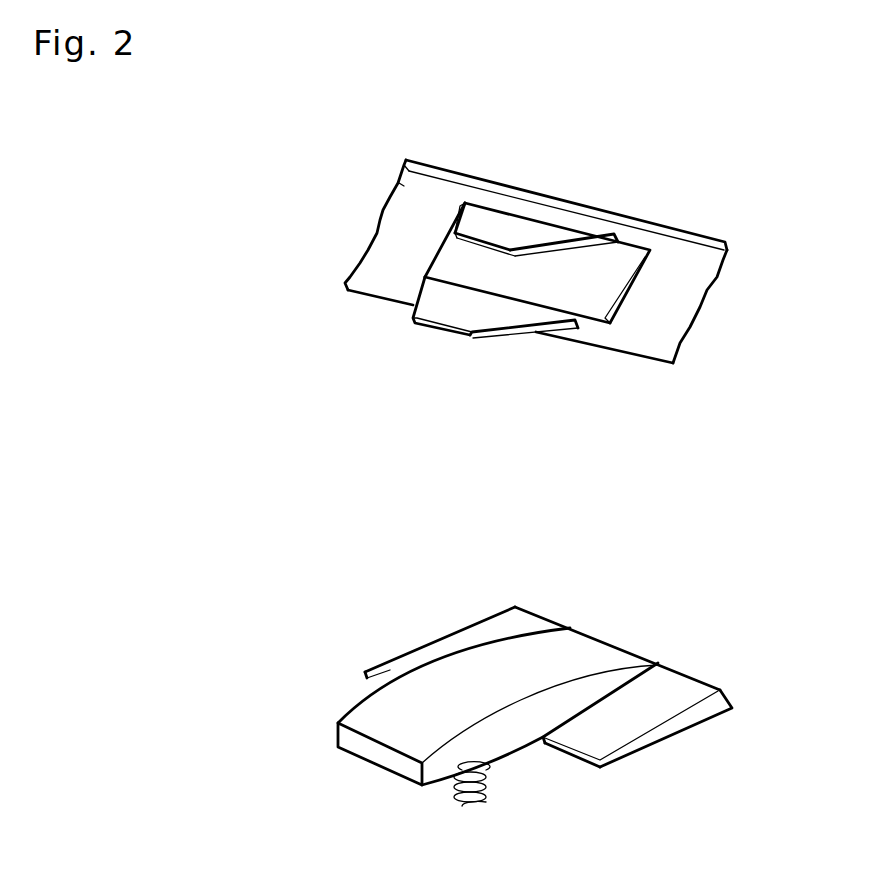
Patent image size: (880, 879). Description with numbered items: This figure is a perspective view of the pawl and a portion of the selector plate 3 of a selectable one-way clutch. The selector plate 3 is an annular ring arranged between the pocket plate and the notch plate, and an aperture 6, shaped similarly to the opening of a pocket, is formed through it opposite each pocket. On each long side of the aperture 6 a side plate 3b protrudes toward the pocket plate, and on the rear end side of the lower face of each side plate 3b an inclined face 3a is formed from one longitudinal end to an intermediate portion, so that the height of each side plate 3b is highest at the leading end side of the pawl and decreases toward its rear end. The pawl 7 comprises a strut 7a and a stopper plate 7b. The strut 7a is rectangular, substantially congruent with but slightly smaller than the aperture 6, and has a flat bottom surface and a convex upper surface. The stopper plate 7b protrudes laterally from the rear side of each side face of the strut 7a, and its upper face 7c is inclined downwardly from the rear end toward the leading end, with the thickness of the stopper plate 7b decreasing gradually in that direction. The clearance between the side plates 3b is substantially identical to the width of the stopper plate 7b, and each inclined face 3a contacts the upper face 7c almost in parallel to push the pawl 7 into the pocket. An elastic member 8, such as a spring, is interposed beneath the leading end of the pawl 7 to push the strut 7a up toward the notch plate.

The selector plate 3 is at (697, 252).
The inclined face 3a is at (596, 244).
The side plate 3b is at (487, 218).
The aperture 6 is at (612, 310).
The pawl 7 is at (593, 597).
The strut 7a is at (337, 725).
The stopper plate 7b is at (689, 735).
The upper face 7c is at (488, 627).
The elastic member 8 is at (486, 799).